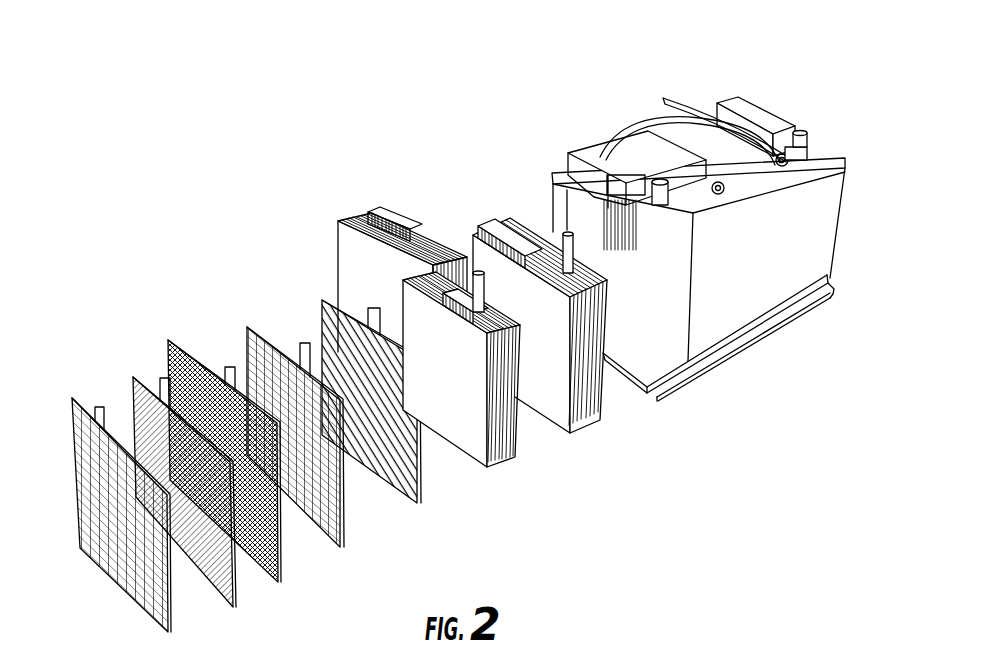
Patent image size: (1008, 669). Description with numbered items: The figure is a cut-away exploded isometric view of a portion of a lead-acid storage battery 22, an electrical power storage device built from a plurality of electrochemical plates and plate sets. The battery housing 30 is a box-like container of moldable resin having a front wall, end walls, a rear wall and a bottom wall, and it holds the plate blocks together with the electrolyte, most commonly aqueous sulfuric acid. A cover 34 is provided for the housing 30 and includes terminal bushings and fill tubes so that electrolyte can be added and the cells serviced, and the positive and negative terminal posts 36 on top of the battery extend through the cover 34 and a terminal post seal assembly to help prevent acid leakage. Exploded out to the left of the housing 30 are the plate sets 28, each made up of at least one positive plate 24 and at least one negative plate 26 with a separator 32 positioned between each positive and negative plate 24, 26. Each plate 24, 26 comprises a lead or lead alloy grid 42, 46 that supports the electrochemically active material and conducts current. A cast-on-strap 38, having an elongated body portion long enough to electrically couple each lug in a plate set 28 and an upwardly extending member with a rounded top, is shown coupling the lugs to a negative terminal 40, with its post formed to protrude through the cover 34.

The lead-acid storage battery 22 is at (683, 36).
The positive plate 24 is at (200, 567).
The negative plate 26 is at (400, 490).
The plate set 28 is at (347, 248).
The battery housing 30 is at (737, 307).
The separator 32 is at (167, 350).
The cover 34 is at (753, 167).
The terminal post 36 is at (652, 182).
The cast-on-strap 38 is at (455, 262).
The negative terminal 40 is at (490, 283).
The grid 42 is at (112, 577).
The grid 46 is at (315, 523).